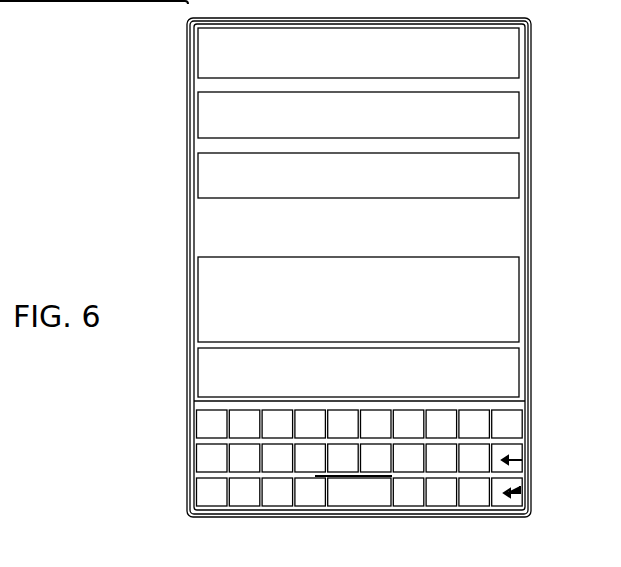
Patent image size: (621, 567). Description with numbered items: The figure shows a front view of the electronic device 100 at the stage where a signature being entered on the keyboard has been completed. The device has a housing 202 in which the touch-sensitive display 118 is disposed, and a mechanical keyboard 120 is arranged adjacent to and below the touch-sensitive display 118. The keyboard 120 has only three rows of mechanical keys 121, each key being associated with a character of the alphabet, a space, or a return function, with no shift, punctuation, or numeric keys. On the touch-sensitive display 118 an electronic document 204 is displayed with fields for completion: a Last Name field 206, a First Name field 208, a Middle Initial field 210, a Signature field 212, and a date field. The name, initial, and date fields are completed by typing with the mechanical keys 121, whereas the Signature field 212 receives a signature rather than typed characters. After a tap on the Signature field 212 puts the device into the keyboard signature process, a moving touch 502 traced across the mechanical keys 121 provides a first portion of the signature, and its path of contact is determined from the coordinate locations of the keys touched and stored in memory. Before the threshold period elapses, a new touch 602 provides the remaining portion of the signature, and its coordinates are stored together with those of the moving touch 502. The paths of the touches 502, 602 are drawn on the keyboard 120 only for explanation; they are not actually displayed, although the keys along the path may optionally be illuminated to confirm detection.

The electronic device 100 is at (582, 502).
The touch-sensitive display 118 is at (523, 55).
The mechanical keyboard 120 is at (535, 420).
The mechanical keys 121 is at (195, 417).
The housing 202 is at (530, 228).
The electronic document 204 is at (487, 42).
The Last Name field 206 is at (508, 108).
The First Name field 208 is at (508, 180).
The Middle Initial field 210 is at (512, 293).
The Signature field 212 is at (513, 378).
The moving touch 502 is at (298, 462).
The new touch 602 is at (403, 465).